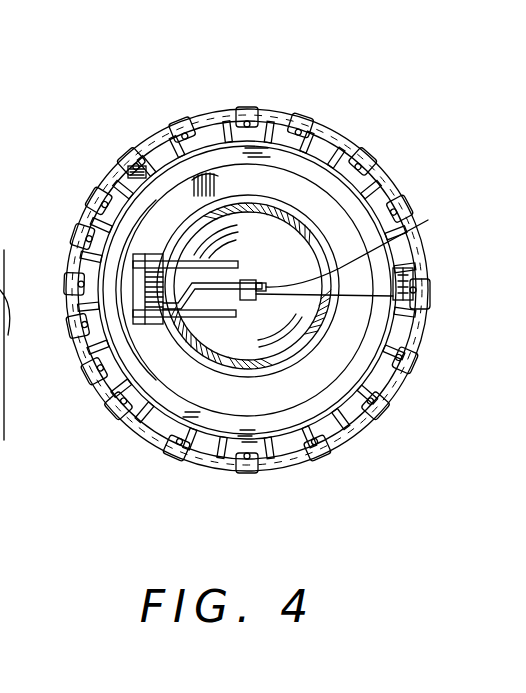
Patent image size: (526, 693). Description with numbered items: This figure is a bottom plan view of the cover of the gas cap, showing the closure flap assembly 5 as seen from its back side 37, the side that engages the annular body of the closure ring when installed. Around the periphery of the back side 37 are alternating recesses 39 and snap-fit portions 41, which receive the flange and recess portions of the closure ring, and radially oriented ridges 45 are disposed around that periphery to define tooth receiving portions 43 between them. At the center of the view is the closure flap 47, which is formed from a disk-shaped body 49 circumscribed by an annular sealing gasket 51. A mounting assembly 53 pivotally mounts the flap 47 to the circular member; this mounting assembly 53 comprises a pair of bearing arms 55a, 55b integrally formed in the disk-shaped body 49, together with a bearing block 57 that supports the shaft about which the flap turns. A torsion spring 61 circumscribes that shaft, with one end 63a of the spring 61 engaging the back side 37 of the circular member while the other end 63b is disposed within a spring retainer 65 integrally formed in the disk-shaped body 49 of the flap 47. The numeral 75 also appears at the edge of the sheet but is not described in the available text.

The closure flap assembly 5 is at (76, 58).
The back side 37 is at (322, 165).
The recesses 39 is at (176, 128).
The snap-fit portions 41 is at (234, 125).
The tooth receiving portions 43 is at (219, 181).
The radially oriented ridges 45 is at (214, 142).
The closure flap 47 is at (413, 305).
The disk-shaped body 49 is at (220, 400).
The annular sealing gasket 51 is at (335, 435).
The mounting assembly 53 is at (112, 279).
The bearing arm 55a is at (238, 265).
The bearing arm 55b is at (196, 320).
The bearing block 57 is at (235, 250).
The torsion spring 61 is at (135, 298).
The spring end 63a is at (133, 280).
The spring end 63b is at (295, 320).
The spring retainer 65 is at (362, 241).
The adjacent element 75 is at (15, 291).